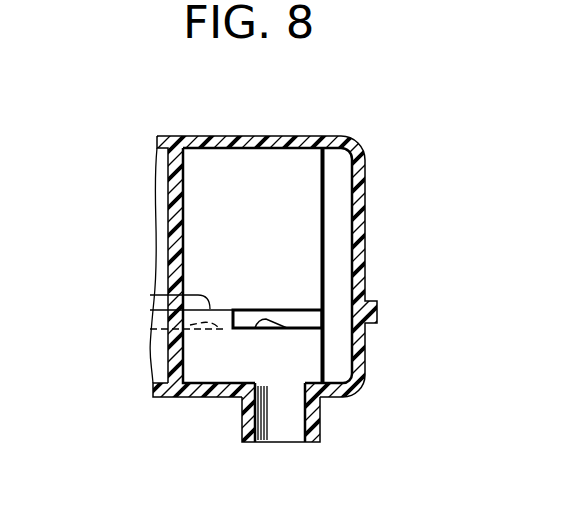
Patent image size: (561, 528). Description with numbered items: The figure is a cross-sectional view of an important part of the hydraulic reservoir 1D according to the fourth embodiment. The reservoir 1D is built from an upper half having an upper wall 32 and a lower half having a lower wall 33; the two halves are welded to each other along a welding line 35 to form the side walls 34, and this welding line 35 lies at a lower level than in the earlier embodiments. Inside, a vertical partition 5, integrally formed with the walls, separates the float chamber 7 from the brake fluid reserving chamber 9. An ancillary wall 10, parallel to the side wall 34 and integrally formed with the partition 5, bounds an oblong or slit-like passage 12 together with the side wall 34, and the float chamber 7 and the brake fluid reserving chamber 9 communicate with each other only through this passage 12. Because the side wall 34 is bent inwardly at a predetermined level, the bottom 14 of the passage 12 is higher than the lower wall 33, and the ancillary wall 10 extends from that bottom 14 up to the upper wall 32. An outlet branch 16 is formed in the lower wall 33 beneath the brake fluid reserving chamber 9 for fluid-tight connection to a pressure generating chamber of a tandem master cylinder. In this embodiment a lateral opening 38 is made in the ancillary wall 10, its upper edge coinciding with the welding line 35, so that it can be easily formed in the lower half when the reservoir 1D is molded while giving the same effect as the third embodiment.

The hydraulic reservoir 1D is at (405, 90).
The partition 5 is at (173, 203).
The float chamber 7 is at (165, 250).
The brake fluid reserving chamber 9 is at (283, 258).
The ancillary wall 10 is at (287, 190).
The oblong passage 12 is at (313, 320).
The bottom of oblong passage 14 is at (150, 330).
The outlet branch 16 is at (306, 399).
The upper wall 32 is at (228, 137).
The lower wall 33 is at (206, 398).
The side wall 34 is at (355, 210).
The welding line 35 is at (173, 298).
The lateral opening 38 is at (280, 325).